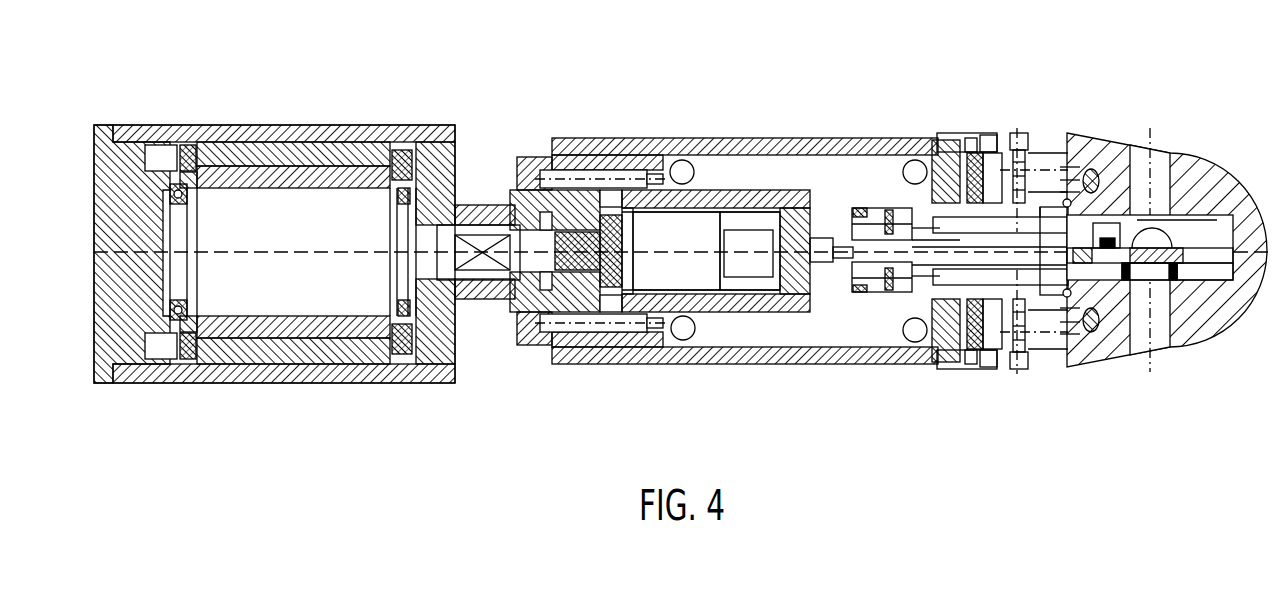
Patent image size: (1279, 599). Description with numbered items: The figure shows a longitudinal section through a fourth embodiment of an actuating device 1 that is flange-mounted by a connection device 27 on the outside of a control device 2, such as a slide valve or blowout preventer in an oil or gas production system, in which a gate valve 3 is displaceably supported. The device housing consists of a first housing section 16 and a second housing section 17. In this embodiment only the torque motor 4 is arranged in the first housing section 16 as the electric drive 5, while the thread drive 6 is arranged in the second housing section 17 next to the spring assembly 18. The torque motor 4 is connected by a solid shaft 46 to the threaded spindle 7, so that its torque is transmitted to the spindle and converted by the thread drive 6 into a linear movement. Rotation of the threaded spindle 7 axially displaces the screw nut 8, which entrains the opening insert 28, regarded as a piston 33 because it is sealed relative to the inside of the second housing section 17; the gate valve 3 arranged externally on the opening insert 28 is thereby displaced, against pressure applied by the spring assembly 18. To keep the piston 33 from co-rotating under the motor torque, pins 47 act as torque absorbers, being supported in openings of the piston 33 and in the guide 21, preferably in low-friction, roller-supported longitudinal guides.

The actuating device 1 is at (440, 90).
The control device 2 is at (1185, 117).
The gate valve 3 is at (915, 252).
The torque motor 4 is at (274, 220).
The electric drive 5 is at (338, 122).
The thread drive 6 is at (751, 190).
The threaded spindle 7 is at (760, 257).
The screw nut 8 is at (682, 262).
The first housing section 16 is at (95, 403).
The second housing section 17 is at (500, 403).
The spring assembly 18 is at (681, 160).
The guide 21 is at (527, 152).
The connection device 27 is at (1016, 123).
The opening insert 28 is at (870, 183).
The piston 33 is at (805, 186).
The shaft 46 is at (457, 303).
The pins 47 is at (590, 155).